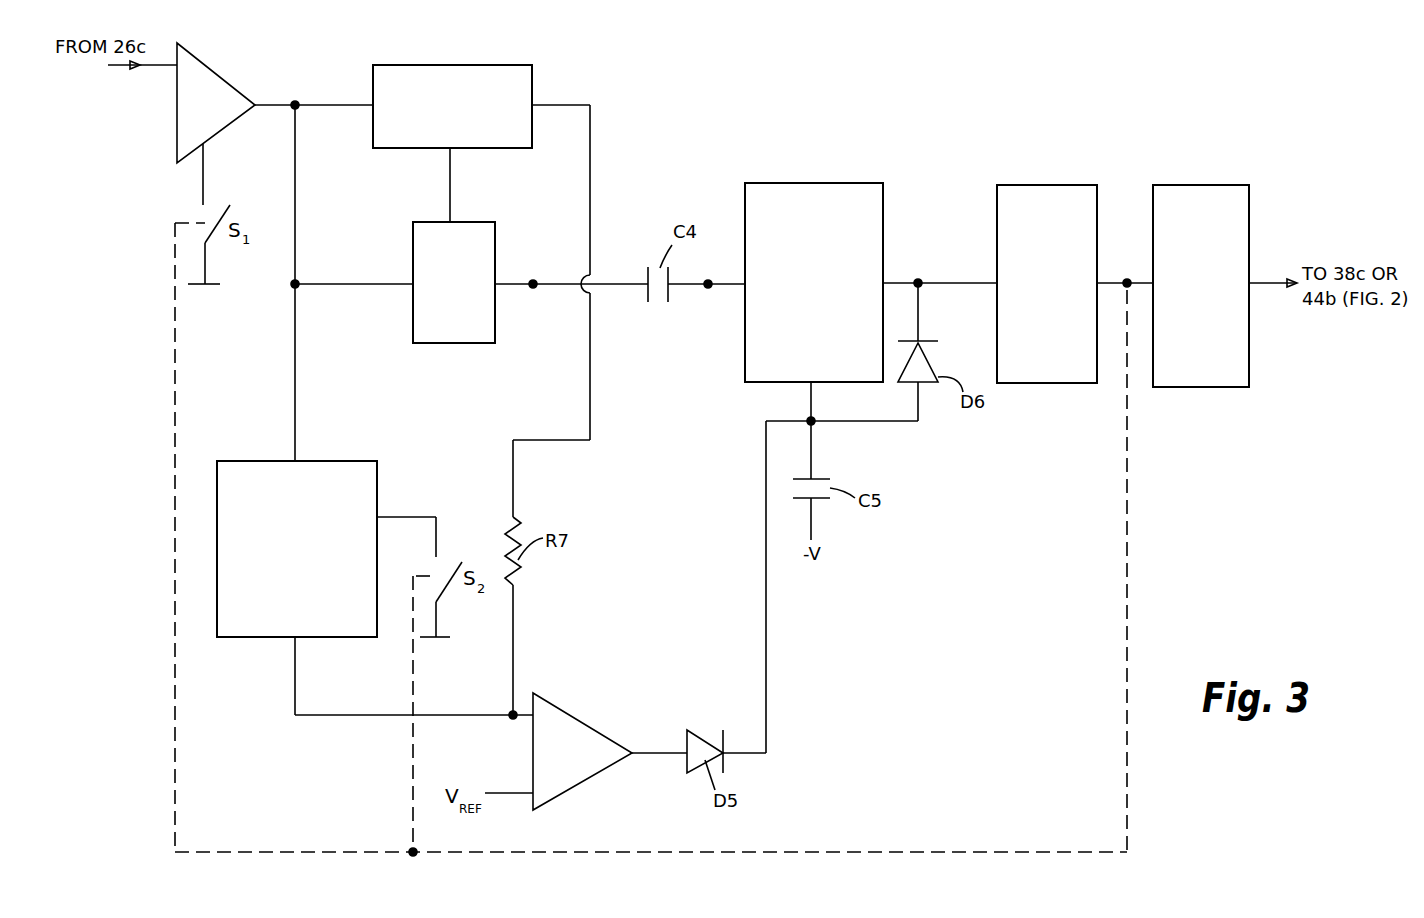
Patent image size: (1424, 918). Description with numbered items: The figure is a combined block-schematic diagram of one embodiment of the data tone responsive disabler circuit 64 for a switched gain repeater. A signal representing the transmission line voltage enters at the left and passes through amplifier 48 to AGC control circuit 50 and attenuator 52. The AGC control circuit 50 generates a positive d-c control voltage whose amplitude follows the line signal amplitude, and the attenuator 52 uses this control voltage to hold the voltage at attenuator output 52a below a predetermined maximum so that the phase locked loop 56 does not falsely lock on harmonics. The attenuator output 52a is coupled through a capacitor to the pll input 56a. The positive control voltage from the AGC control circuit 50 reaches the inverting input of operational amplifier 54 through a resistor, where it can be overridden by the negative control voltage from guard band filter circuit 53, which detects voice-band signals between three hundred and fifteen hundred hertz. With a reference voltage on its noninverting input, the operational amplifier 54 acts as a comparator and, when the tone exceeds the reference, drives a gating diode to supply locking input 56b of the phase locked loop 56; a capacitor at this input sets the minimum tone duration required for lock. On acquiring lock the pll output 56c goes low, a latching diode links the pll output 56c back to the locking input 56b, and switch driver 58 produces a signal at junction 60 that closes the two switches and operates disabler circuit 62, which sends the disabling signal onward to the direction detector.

The amplifier 48 is at (228, 82).
The AGC control circuit 50 is at (393, 65).
The attenuator 52 is at (495, 247).
The attenuator output 52a is at (533, 288).
The guard band filter circuit 53 is at (345, 461).
The operational amplifier 54 is at (592, 727).
The phase locked loop 56 is at (843, 183).
The pll input 56a is at (708, 288).
The locking input 56b is at (815, 424).
The pll output 56c is at (918, 280).
The switch driver 58 is at (1050, 185).
The junction 60 is at (1127, 280).
The disabler circuit 62 is at (1185, 185).
The data tone responsive disabler circuit 64 is at (734, 90).